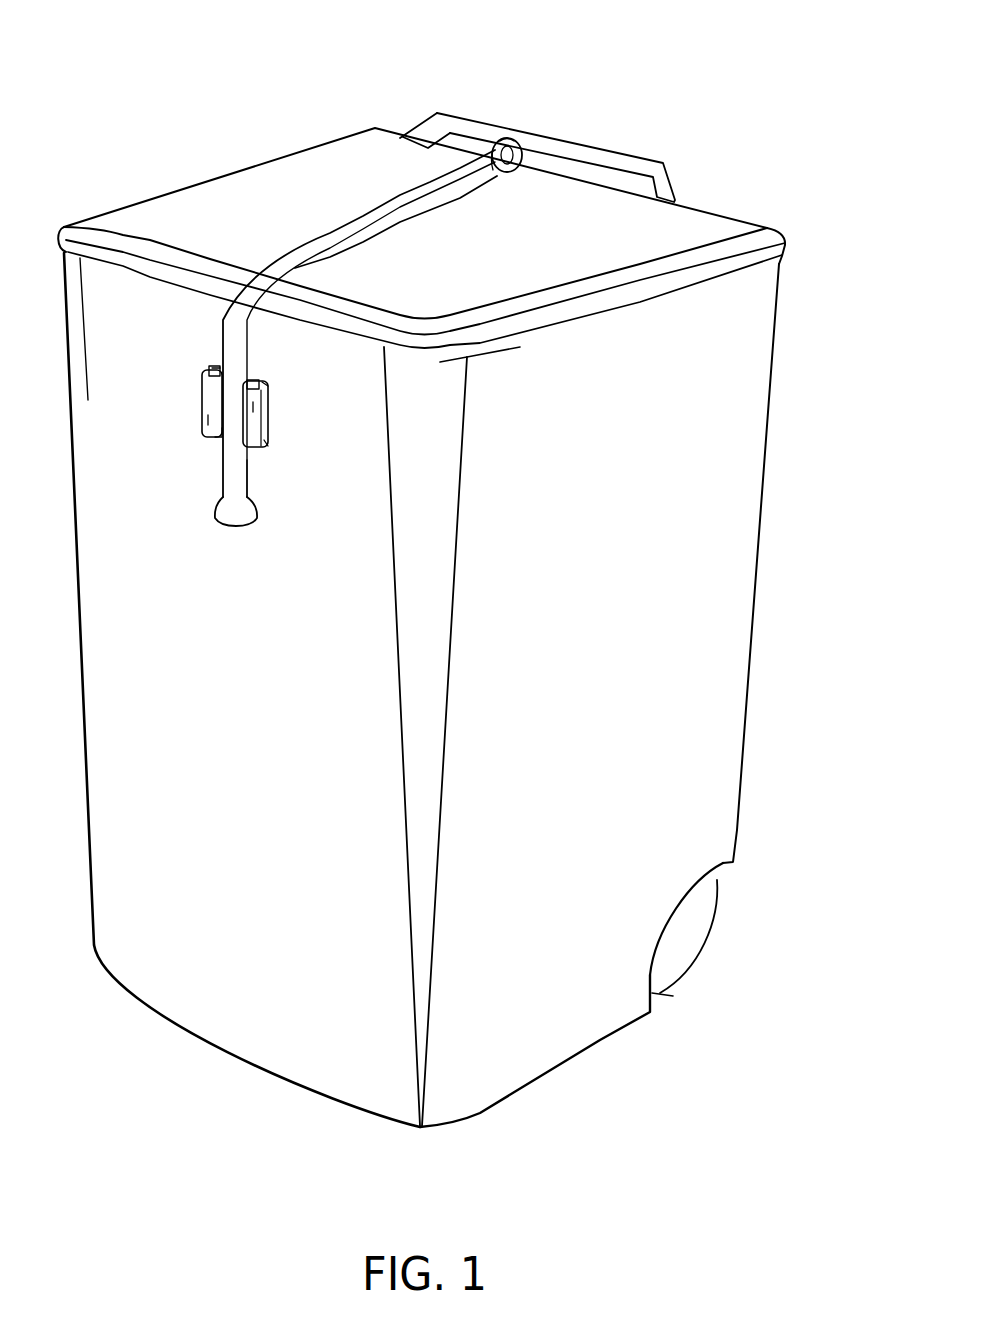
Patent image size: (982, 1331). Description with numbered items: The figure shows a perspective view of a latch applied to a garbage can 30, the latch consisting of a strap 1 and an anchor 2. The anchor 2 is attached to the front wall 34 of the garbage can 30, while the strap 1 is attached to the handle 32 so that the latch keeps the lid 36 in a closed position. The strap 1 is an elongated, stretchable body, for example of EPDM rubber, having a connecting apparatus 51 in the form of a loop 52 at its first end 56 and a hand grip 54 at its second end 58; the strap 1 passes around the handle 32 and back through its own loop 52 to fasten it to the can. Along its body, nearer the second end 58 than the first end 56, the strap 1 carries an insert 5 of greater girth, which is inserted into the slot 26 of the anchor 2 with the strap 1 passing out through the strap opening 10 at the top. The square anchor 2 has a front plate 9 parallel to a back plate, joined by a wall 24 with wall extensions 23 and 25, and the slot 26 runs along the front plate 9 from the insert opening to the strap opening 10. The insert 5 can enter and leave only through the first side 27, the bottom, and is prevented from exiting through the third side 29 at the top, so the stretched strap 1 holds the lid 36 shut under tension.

The strap 1 is at (365, 223).
The anchor 2 is at (202, 398).
The insert 5 is at (243, 418).
The front plate 9 is at (208, 420).
The strap opening 10 is at (249, 389).
The wall extension 23 is at (215, 377).
The wall 24 is at (267, 437).
The wall extension 25 is at (263, 387).
The slot 26 is at (222, 433).
The first side 27 is at (220, 437).
The third side 29 is at (217, 368).
The garbage can 30 is at (767, 437).
The handle 32 is at (622, 163).
The front wall 34 is at (253, 770).
The lid 36 is at (500, 256).
The connecting apparatus 51 is at (510, 134).
The loop 52 is at (493, 150).
The hand grip 54 is at (233, 528).
The first end 56 is at (523, 131).
The second end 58 is at (248, 473).